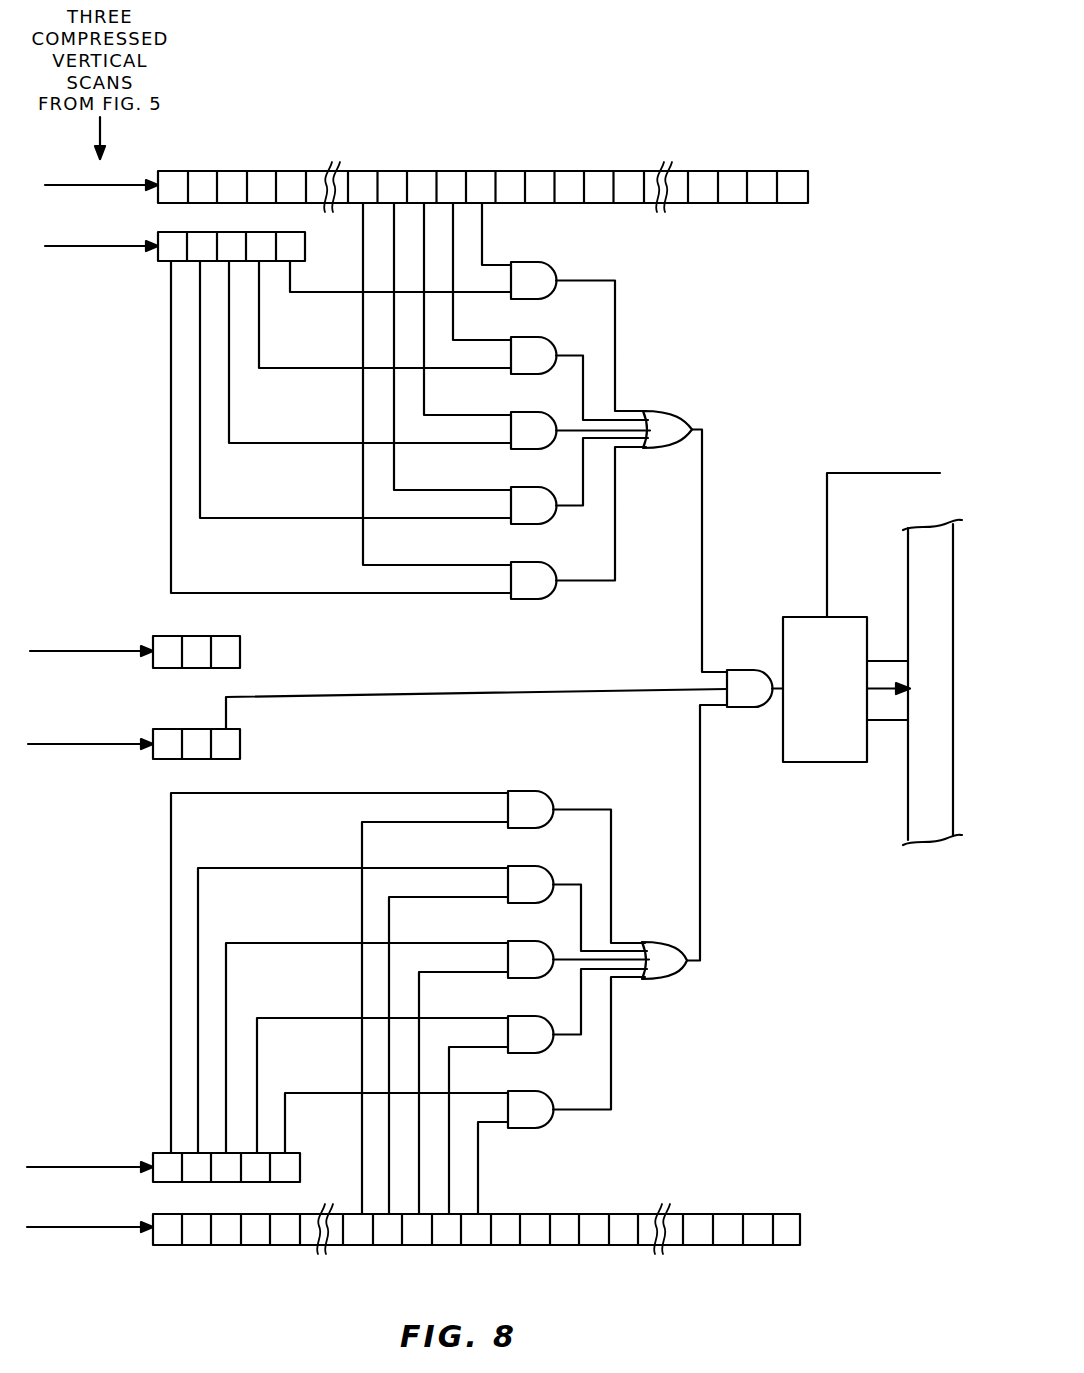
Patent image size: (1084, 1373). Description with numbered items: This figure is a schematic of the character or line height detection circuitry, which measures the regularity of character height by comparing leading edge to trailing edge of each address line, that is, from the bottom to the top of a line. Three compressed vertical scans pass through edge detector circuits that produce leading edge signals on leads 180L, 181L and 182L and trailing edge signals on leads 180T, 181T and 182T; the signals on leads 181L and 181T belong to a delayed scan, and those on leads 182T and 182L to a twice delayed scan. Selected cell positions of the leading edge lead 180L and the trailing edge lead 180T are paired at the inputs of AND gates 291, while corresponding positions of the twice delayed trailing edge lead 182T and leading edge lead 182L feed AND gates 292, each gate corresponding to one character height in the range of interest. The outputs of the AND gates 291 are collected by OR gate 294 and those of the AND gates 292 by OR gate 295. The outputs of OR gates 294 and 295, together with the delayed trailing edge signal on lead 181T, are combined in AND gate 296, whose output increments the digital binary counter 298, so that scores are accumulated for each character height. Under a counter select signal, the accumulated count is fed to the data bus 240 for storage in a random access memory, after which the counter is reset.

The leading edge signal lead 180L is at (64, 194).
The trailing edge signal lead 180T is at (88, 248).
The leading edge signal lead 181L is at (62, 660).
The trailing edge signal lead 181T is at (92, 744).
The trailing edge signal lead 182T is at (54, 1172).
The leading edge signal lead 182L is at (90, 1229).
The AND gates 291 is at (548, 267).
The AND gates 292 is at (547, 796).
The OR gate 294 is at (670, 411).
The OR gate 295 is at (665, 979).
The AND gate 296 is at (757, 709).
The counter 298 is at (783, 632).
The data bus 240 is at (908, 808).